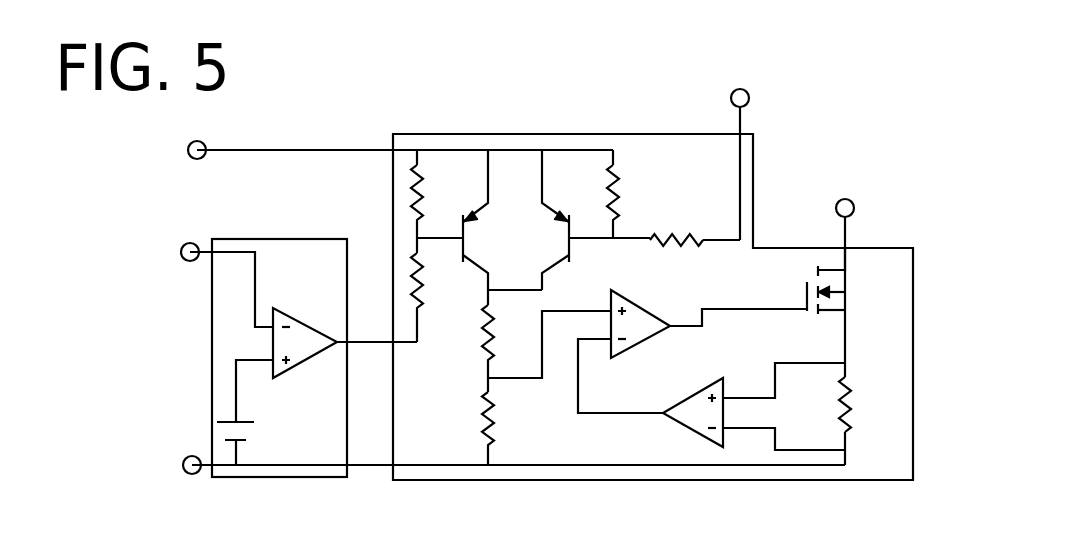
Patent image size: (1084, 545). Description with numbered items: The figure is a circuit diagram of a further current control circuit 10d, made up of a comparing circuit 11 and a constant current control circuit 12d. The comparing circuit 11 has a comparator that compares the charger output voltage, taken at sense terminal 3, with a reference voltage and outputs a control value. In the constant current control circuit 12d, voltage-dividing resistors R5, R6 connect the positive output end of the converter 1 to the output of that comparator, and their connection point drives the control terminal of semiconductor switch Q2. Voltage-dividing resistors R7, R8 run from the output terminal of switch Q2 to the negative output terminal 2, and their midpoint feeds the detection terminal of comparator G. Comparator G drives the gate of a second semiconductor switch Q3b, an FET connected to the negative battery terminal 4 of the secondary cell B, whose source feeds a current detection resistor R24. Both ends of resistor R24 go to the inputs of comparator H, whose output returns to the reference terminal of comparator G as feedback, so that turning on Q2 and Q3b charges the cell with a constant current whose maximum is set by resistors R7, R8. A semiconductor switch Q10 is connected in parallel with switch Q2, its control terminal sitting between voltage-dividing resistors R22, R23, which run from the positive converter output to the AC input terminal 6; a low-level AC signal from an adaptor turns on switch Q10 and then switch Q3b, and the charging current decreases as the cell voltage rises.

The converter 1 is at (157, 145).
The output terminal (Vo-) 2 is at (147, 471).
The sense terminal (SENS) 3 is at (138, 252).
The battery negative terminal (BATT-) 4 is at (830, 188).
The AC input terminal (AC IN) 6 is at (734, 131).
The current control circuit 10d is at (300, 199).
The comparing circuit 11 is at (248, 346).
The constant current control circuit 12d is at (907, 467).
The voltage-dividing resistor R5 is at (438, 194).
The voltage-dividing resistor R6 is at (438, 290).
The voltage-dividing resistor R7 is at (511, 334).
The voltage-dividing resistor R8 is at (466, 421).
The voltage-dividing resistor R22 is at (643, 192).
The voltage-dividing resistor R23 is at (686, 219).
The current detection resistor R24 is at (871, 388).
The semiconductor switch Q2 is at (465, 220).
The semiconductor switch Q10 is at (584, 220).
The second semiconductor switch Q3b is at (854, 281).
The comparator # G is at (650, 317).
The comparator # H is at (675, 409).